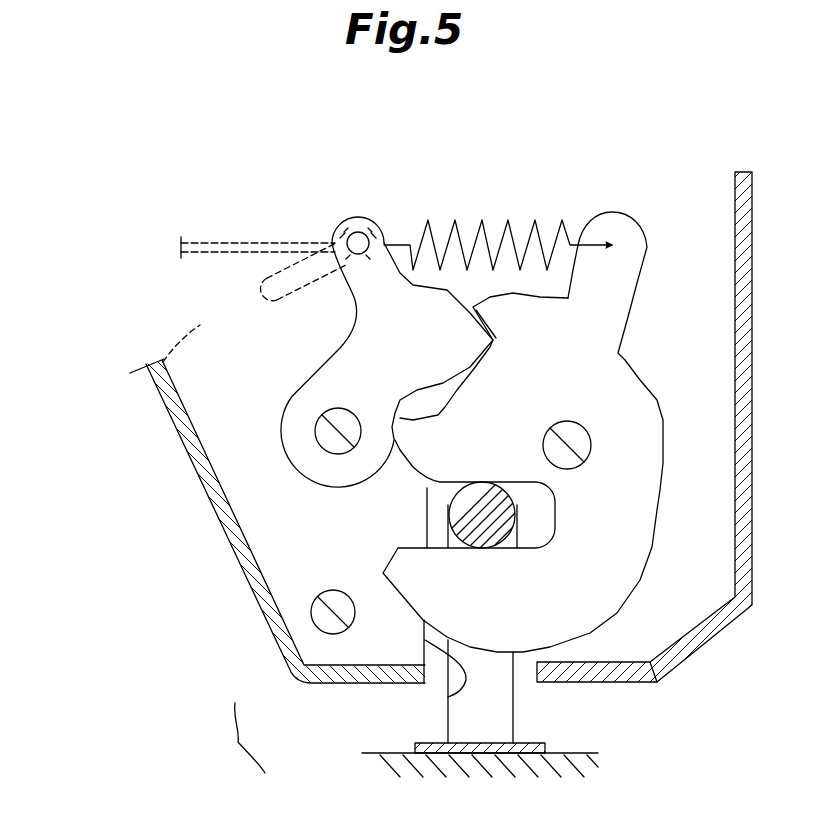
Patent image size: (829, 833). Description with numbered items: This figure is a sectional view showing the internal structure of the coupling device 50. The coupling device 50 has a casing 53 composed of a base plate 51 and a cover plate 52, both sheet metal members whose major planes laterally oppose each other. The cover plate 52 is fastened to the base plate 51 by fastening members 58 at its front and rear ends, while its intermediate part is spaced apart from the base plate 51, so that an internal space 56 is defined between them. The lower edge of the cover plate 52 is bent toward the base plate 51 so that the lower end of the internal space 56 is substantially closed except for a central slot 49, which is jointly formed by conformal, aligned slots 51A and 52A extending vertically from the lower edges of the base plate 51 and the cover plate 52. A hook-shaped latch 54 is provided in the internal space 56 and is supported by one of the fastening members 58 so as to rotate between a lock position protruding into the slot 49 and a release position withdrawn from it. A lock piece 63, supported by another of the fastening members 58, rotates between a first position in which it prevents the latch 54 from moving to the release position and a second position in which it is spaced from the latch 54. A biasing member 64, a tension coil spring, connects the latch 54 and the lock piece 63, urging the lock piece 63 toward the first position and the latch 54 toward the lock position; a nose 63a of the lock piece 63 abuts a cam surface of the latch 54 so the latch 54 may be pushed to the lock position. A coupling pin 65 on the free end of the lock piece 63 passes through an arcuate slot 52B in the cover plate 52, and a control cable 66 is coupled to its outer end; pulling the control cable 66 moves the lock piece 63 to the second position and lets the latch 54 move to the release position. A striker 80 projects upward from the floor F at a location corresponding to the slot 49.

The central slot 49 is at (371, 706).
The coupling device 50 is at (650, 687).
The base plate 51 is at (690, 660).
The slot 51A is at (448, 690).
The cover plate 52 is at (172, 432).
The slot 52A is at (440, 685).
The arcuate slot 52B is at (268, 283).
The casing 53 is at (215, 525).
The latch 54 is at (640, 523).
The internal space 56 is at (702, 288).
The fastening members 58 is at (318, 418).
The lock piece 63 is at (333, 374).
The nose 63a is at (472, 343).
The biasing member 64 is at (494, 215).
The coupling pin 65 is at (350, 222).
The control cable 66 is at (220, 242).
The striker 80 is at (448, 512).
The floor F is at (578, 752).